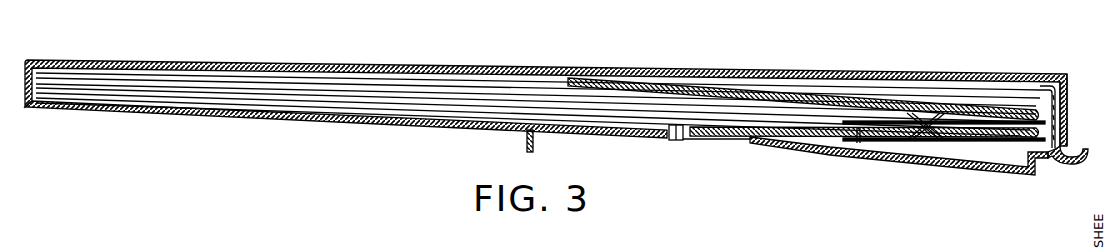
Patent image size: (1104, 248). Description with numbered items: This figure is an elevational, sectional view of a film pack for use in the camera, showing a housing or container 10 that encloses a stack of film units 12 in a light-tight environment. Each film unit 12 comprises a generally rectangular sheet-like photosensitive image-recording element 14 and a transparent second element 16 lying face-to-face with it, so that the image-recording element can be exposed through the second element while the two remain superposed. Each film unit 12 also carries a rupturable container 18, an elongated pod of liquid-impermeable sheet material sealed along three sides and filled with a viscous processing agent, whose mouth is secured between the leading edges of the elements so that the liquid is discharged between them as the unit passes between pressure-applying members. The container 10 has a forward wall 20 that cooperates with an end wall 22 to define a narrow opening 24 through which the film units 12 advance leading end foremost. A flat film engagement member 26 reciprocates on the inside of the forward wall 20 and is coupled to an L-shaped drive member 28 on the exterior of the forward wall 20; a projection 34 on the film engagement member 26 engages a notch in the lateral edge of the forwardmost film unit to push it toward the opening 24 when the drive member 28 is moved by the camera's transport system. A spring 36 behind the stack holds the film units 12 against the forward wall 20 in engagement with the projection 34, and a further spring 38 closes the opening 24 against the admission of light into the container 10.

The container 10 is at (372, 62).
The film unit 12 is at (785, 130).
The image-recording element 14 is at (513, 107).
The second element 16 is at (408, 95).
The rupturable container 18 is at (995, 130).
The forward wall 20 is at (423, 124).
The end wall 22 is at (1066, 84).
The opening 24 is at (1058, 143).
The film engagement member 26 is at (712, 135).
The drive member 28 is at (572, 131).
The projection 34 is at (858, 133).
The spring 36 is at (713, 98).
The spring 38 is at (1084, 156).